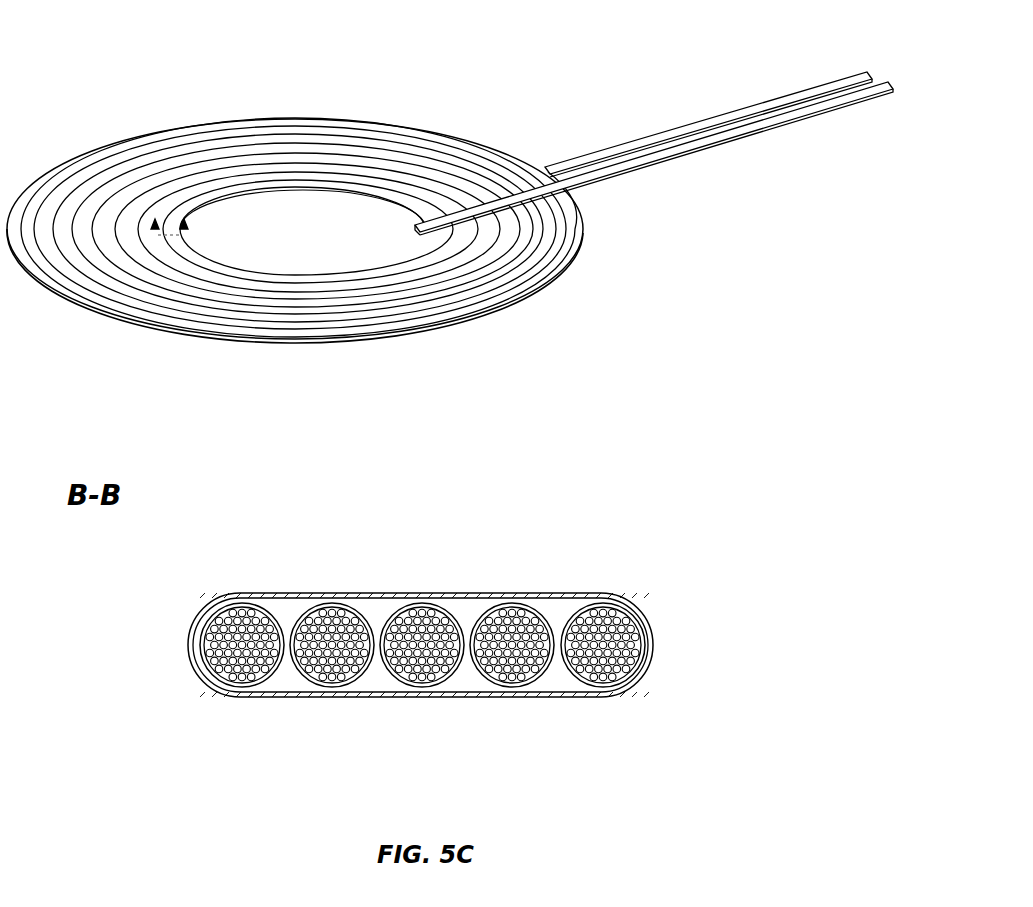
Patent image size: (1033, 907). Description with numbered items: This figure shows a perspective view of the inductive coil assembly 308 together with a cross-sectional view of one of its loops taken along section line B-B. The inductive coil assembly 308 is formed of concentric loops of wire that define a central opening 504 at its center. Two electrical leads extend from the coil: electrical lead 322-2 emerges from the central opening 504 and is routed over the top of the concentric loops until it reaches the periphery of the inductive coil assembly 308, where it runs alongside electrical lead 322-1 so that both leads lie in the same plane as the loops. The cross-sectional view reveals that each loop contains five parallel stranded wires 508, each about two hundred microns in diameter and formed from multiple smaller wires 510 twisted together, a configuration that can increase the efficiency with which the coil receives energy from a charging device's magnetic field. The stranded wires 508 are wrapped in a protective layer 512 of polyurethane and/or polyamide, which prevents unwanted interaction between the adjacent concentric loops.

The inductive coil assembly 308 is at (88, 78).
The central opening 504 is at (314, 246).
The electrical lead 322-1 is at (775, 98).
The electrical lead 322-2 is at (840, 105).
The stranded wire 508 is at (205, 608).
The smaller wire 510 is at (510, 604).
The protective layer 512 is at (610, 596).